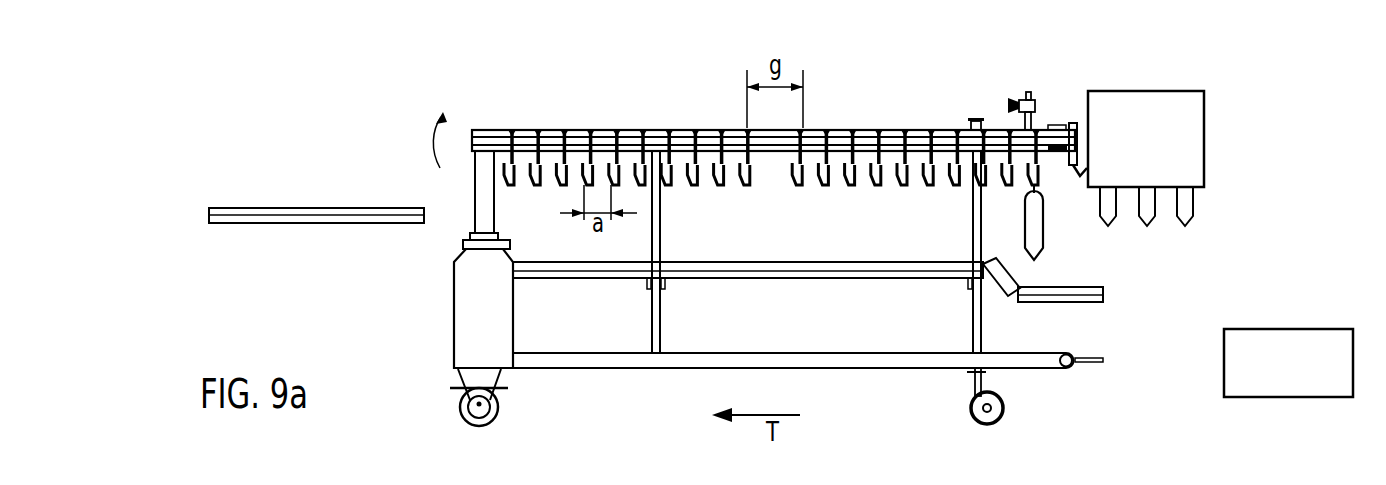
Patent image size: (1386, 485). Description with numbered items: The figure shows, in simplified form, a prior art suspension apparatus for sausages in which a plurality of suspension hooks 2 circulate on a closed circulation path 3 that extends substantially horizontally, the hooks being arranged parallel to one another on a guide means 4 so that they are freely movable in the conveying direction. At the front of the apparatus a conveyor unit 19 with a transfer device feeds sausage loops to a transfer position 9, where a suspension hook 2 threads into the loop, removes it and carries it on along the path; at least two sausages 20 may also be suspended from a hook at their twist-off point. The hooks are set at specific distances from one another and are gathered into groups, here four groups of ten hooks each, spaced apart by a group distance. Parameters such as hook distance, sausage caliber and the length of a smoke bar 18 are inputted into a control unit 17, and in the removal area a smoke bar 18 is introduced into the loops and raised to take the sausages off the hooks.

The suspension hook 2 is at (828, 186).
The closed circulation path 3 is at (786, 122).
The guide means 4 is at (472, 138).
The transfer position 9 is at (1068, 123).
The control unit 17 is at (1333, 337).
The smoke bar 18 is at (366, 208).
The conveyor unit 19 is at (1172, 96).
The sausages 20 is at (1045, 236).